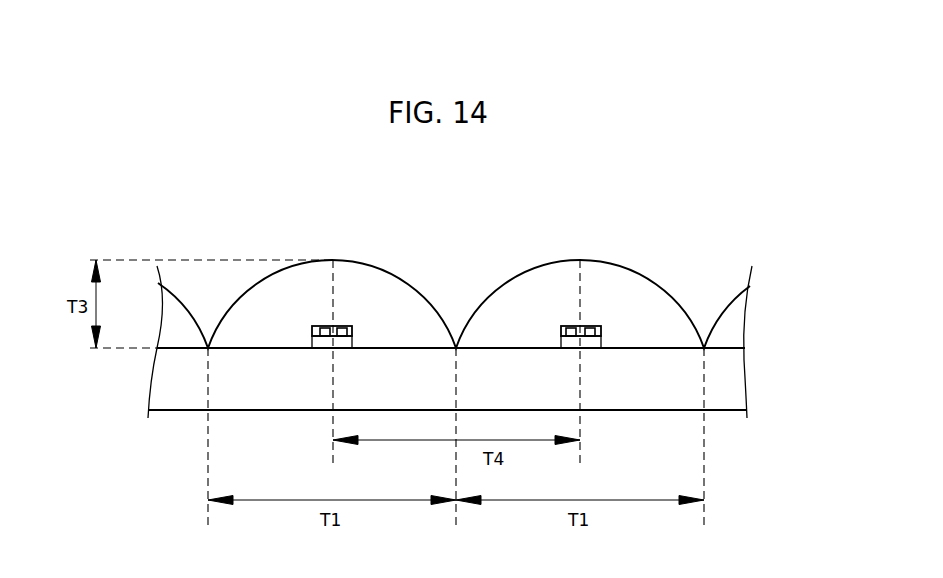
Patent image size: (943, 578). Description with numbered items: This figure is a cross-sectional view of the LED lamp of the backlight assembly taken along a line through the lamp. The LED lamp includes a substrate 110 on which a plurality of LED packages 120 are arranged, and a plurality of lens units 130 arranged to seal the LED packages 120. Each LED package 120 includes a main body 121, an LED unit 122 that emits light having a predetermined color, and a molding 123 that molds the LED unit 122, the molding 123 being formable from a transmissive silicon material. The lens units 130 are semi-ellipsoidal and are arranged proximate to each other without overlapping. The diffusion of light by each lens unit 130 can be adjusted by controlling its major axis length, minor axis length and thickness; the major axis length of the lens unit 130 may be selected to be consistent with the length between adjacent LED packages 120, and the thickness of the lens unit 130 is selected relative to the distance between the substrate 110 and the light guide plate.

The substrate 110 is at (727, 383).
The LED package 120 is at (456, 275).
The main body 121 is at (353, 337).
The LED unit 122 is at (343, 335).
The molding 123 is at (333, 325).
The lens unit 130 is at (627, 280).